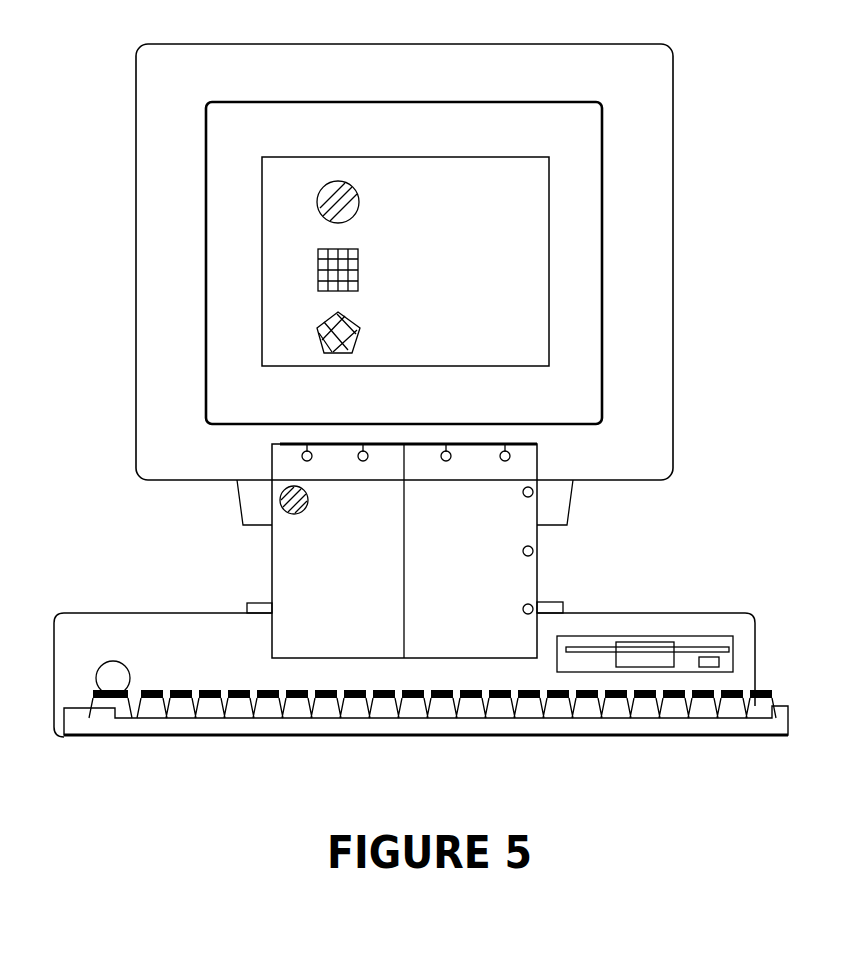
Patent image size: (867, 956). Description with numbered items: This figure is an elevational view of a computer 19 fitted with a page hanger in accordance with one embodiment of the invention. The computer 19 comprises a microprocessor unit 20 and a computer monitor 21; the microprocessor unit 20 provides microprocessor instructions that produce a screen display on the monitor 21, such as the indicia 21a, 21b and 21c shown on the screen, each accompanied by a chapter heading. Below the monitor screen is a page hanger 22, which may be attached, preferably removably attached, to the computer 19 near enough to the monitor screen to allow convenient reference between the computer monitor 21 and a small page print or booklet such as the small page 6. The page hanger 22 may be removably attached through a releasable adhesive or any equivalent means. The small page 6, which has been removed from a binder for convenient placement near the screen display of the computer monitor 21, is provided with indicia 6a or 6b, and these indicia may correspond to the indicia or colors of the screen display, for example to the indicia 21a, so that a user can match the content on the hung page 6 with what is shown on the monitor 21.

The computer 19 is at (738, 76).
The computer monitor 21 is at (674, 318).
The indicia of screen display 21a is at (314, 203).
The indicia of screen display 21b is at (317, 268).
The indicia of screen display 21c is at (318, 333).
The page hanger 22 is at (538, 445).
The small page 6 is at (538, 572).
The indicia 6a is at (279, 502).
The indicia 6b is at (332, 506).
The microprocessor unit 20 is at (688, 611).